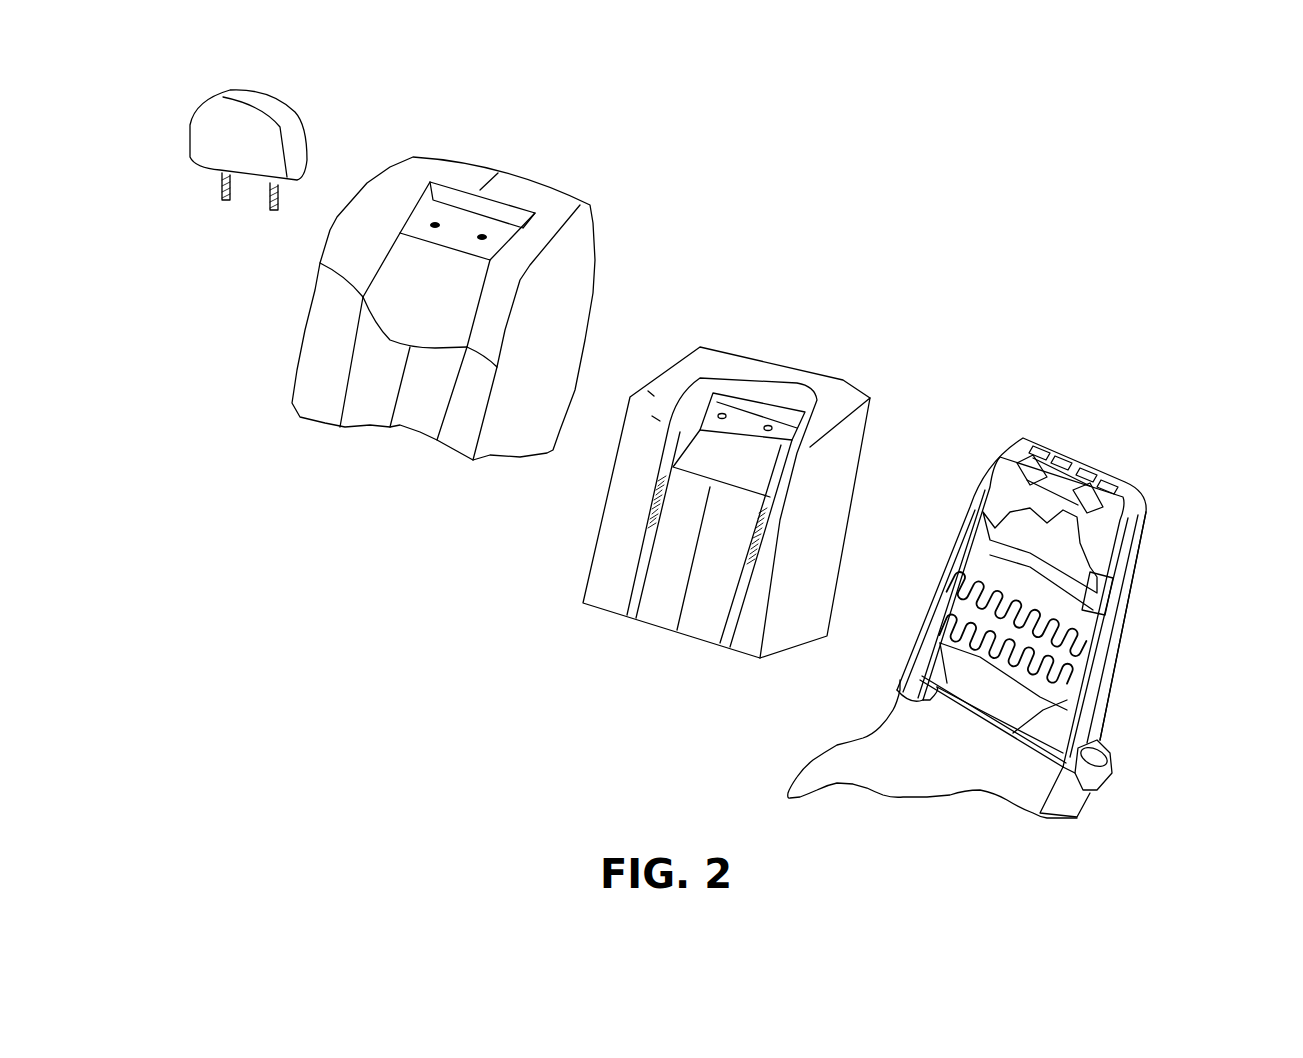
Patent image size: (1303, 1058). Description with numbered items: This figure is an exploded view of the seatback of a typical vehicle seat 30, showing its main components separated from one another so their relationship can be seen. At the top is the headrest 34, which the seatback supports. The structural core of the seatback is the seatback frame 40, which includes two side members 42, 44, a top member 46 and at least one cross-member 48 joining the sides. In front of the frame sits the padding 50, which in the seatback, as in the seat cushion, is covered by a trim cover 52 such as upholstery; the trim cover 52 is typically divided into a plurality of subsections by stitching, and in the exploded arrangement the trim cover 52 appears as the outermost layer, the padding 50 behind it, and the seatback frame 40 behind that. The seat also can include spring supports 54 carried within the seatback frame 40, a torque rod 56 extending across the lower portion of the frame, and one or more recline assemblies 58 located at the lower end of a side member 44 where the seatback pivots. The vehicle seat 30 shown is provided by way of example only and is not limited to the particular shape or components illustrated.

The vehicle seat 30 is at (810, 195).
The headrest 34 is at (300, 118).
The seatback frame 40 is at (1155, 495).
The side member 42 is at (980, 478).
The side member 44 is at (1133, 552).
The top member 46 is at (1083, 463).
The cross-member 48 is at (957, 668).
The padding 50 is at (850, 368).
The trim cover 52 is at (593, 222).
The spring supports 54 is at (980, 577).
The torque rod 56 is at (1020, 740).
The recline assembly 58 is at (1113, 775).